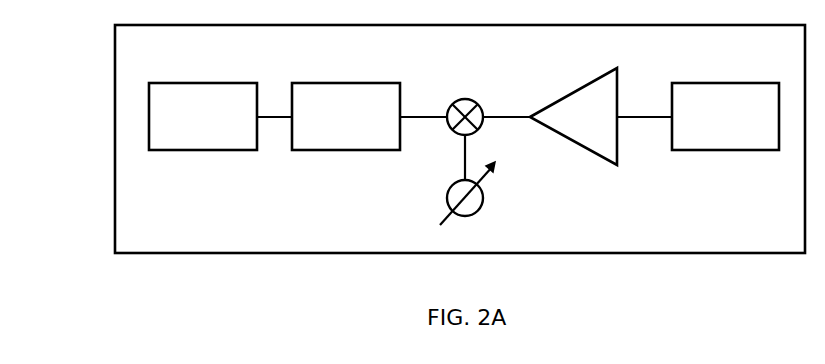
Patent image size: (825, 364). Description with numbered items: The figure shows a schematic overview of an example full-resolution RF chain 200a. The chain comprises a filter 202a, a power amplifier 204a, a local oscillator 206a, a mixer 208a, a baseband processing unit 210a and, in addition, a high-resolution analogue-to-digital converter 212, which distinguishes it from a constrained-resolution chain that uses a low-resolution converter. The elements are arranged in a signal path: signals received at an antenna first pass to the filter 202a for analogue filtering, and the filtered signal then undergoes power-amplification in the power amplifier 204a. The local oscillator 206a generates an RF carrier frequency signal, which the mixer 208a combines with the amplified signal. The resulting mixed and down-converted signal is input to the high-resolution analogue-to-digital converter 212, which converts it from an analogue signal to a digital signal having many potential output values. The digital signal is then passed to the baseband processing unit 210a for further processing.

The full-resolution RF chain 200a is at (257, 253).
The filter 202a is at (730, 150).
The power amplifier 204a is at (593, 152).
The local oscillator 206a is at (447, 200).
The mixer 208a is at (480, 98).
The baseband processing unit 210a is at (210, 150).
The high-resolution analogue-to-digital converter 212 is at (327, 150).